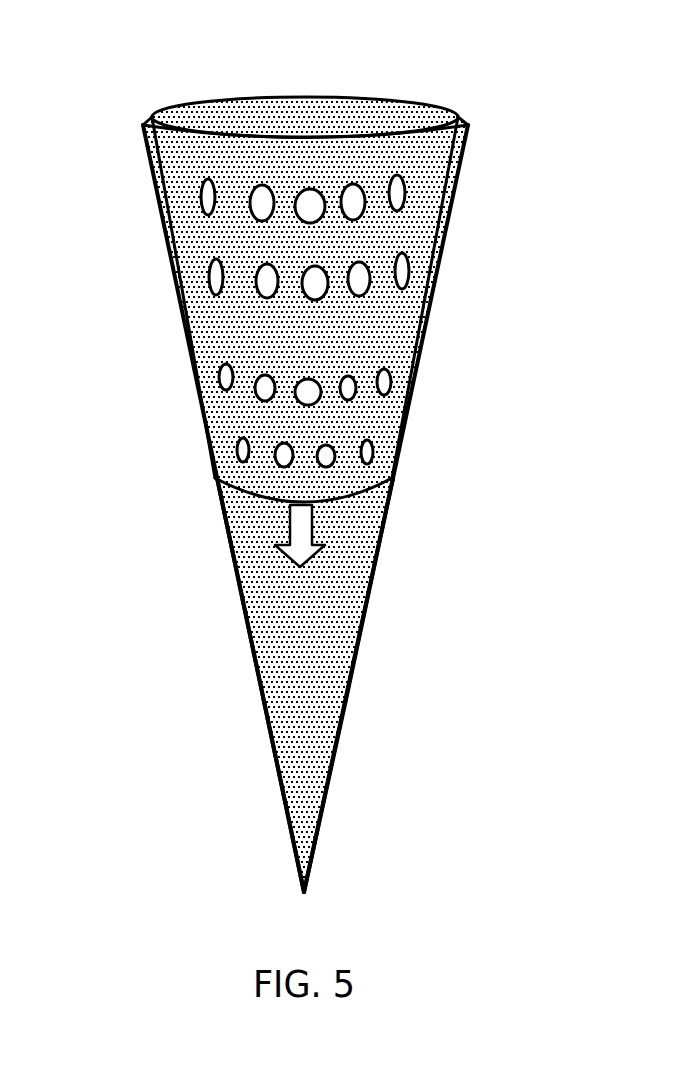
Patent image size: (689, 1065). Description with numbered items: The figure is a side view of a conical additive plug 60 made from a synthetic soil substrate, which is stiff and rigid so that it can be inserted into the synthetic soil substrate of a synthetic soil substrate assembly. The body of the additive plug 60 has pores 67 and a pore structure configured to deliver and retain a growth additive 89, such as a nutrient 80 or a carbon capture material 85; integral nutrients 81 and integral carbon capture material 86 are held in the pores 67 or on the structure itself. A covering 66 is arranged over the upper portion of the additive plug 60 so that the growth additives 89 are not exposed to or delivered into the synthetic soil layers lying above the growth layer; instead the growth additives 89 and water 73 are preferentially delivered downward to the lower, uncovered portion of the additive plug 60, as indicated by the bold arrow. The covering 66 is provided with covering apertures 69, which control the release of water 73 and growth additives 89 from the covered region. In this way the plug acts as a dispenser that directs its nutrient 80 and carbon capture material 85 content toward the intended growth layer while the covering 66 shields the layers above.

The additive plug 60 is at (148, 106).
The covering 66 is at (392, 350).
The covering apertures 69 is at (402, 268).
The pores 67 is at (345, 582).
The nutrient 80 is at (265, 567).
The carbon capture material 85 is at (273, 617).
The water 73 is at (312, 727).
The integral nutrients 81 is at (335, 647).
The growth additive 89 is at (332, 688).
The integral carbon capture material 86 is at (332, 722).